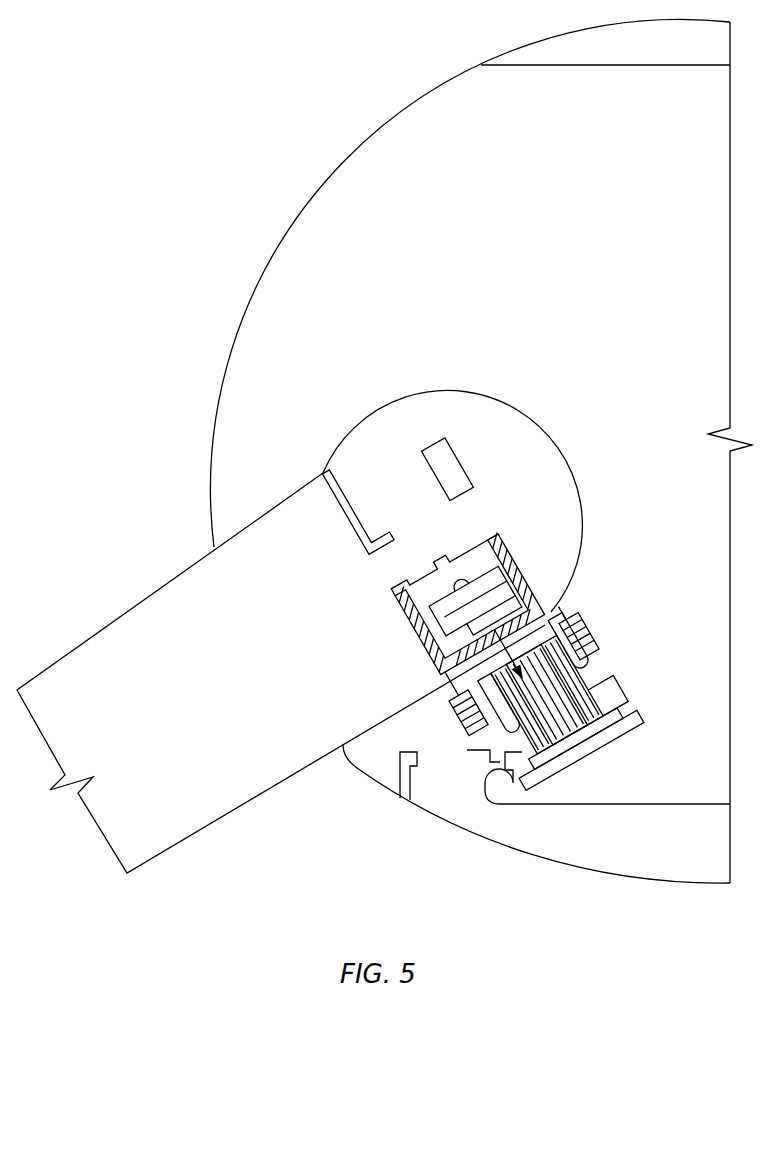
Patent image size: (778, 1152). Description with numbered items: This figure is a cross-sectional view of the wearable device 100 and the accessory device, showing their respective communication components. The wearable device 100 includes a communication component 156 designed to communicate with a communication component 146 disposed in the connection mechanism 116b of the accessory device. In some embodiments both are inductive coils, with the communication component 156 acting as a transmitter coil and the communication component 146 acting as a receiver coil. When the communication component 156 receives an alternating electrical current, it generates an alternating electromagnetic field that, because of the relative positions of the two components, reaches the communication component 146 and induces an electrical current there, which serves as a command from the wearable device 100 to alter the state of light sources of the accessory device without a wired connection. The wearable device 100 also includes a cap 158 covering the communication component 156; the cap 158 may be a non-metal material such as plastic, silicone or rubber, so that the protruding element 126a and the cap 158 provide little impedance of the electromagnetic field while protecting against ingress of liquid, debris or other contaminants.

The wearable device 100 is at (163, 91).
The connection mechanism 116b is at (108, 622).
The protruding element 126a is at (424, 623).
The communication component 146 is at (492, 533).
The communication component 156 is at (485, 778).
The cap 158 is at (456, 712).